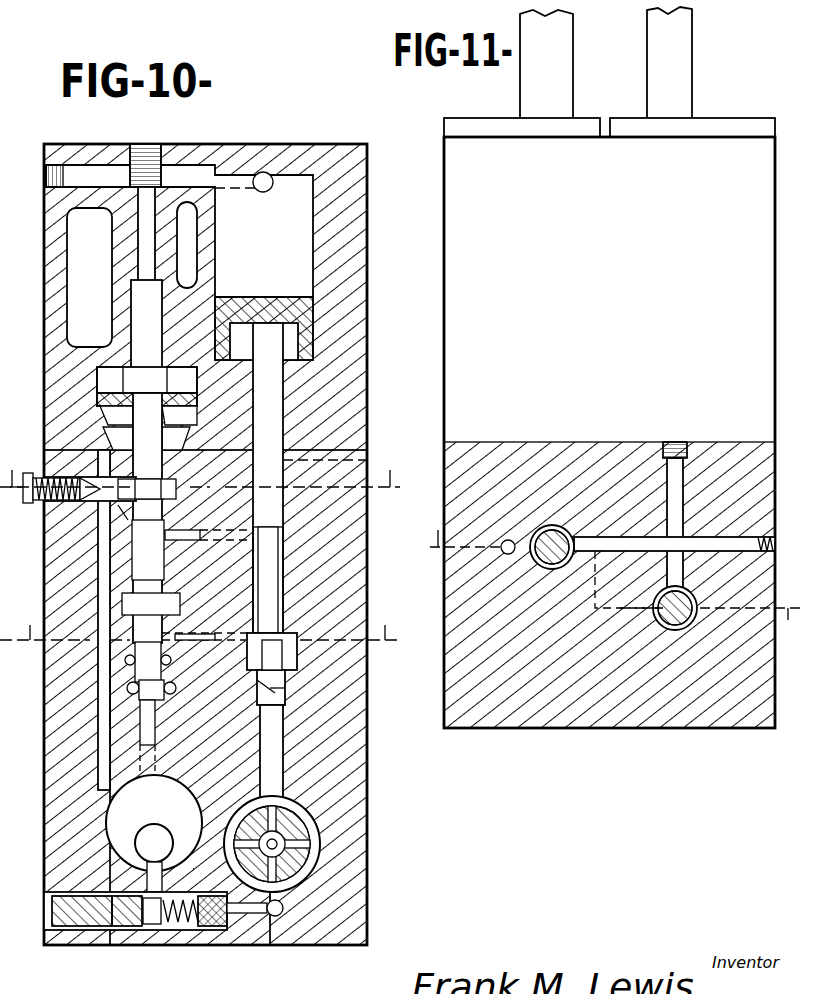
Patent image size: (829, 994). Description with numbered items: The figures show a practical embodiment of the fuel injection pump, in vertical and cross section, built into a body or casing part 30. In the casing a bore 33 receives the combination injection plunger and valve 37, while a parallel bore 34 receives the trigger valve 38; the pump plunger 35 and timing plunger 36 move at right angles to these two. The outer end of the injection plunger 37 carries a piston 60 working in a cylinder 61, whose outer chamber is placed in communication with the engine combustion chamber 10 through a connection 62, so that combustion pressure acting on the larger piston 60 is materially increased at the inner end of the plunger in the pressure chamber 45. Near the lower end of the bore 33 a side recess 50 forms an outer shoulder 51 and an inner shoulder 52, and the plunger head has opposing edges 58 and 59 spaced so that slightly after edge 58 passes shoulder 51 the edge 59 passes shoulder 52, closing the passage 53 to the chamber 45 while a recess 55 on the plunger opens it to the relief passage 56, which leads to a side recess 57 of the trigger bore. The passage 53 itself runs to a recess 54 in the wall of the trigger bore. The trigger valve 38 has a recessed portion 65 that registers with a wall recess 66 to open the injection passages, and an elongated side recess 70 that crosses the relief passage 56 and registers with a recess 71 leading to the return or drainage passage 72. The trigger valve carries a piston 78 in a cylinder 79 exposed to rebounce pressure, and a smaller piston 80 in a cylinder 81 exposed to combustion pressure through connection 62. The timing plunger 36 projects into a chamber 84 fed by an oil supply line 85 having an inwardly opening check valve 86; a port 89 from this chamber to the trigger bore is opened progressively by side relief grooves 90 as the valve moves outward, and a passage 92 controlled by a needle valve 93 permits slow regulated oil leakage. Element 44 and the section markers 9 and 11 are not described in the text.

In FIG. 10, the body or casing part 30 is at (367, 308).
In FIG. 11, the body or casing part 30 is at (775, 300).
In FIG. 10, the cylinder 61 is at (179, 231).
In FIG. 10, the connection 62 is at (261, 172).
In FIG. 10, the piston 60 is at (300, 297).
In FIG. 10, the cylinder 81 is at (137, 291).
In FIG. 10, the combination injection plunger and valve 37 is at (269, 478).
In FIG. 11, the combination injection plunger and valve 37 is at (660, 625).
In FIG. 10, the bore 33 is at (285, 462).
In FIG. 10, the recess 55 is at (296, 575).
In FIG. 10, the edge 58 is at (274, 580).
In FIG. 10, the smaller piston 80 is at (145, 268).
In FIG. 10, the cylinder 79 is at (147, 380).
In FIG. 10, the piston 78 is at (197, 400).
In FIG. 10, the trigger valve 38 is at (146, 518).
In FIG. 11, the trigger valve 38 is at (540, 565).
In FIG. 10, the side recess 57 is at (100, 552).
In FIG. 10, the recess 54 is at (110, 660).
In FIG. 11, the recess 54 is at (574, 528).
In FIG. 10, the needle valve 93 is at (60, 507).
In FIG. 10, the recess 71 is at (175, 481).
In FIG. 10, the elongated side recess 70 is at (163, 500).
In FIG. 10, the return or drainage passage 72 is at (122, 517).
In FIG. 10, the relief passage 56 is at (195, 531).
In FIG. 10, the recessed portion 65 is at (179, 550).
In FIG. 10, the recess 66 is at (180, 600).
In FIG. 10, the passage 53 is at (207, 623).
In FIG. 11, the passage 53 is at (631, 579).
In FIG. 10, the side relief grooves 90 is at (170, 665).
In FIG. 10, the port or passage 89 is at (176, 688).
In FIG. 10, the bore 34 is at (165, 718).
In FIG. 10, the side recess 50 is at (297, 655).
In FIG. 11, the side recess 50 is at (695, 598).
In FIG. 10, the outer shoulder 51 is at (290, 630).
In FIG. 10, the inner shoulder 52 is at (246, 692).
In FIG. 10, the edge 59 is at (290, 688).
In FIG. 10, the pressure chamber 45 is at (283, 748).
In FIG. 10, the chamber 84 is at (154, 823).
In FIG. 10, the timing plunger 36 is at (154, 858).
In FIG. 11, the timing plunger 36 is at (573, 84).
In FIG. 10, the passage 92 is at (98, 778).
In FIG. 11, the passage 92 is at (520, 520).
In FIG. 10, the wheel 44 is at (300, 865).
In FIG. 10, the check valve 86 is at (212, 930).
In FIG. 10, the oil supply line 85 is at (278, 916).
In FIG. 10, the section line 9- 9 is at (200, 461).
In FIG. 10, the section line 11- 11 is at (209, 624).
In FIG. 11, the section line 11- 11 is at (455, 552).
In FIG. 11, the combustion chamber 10 is at (716, 624).
In FIG. 11, the pump plunger 35 is at (692, 82).